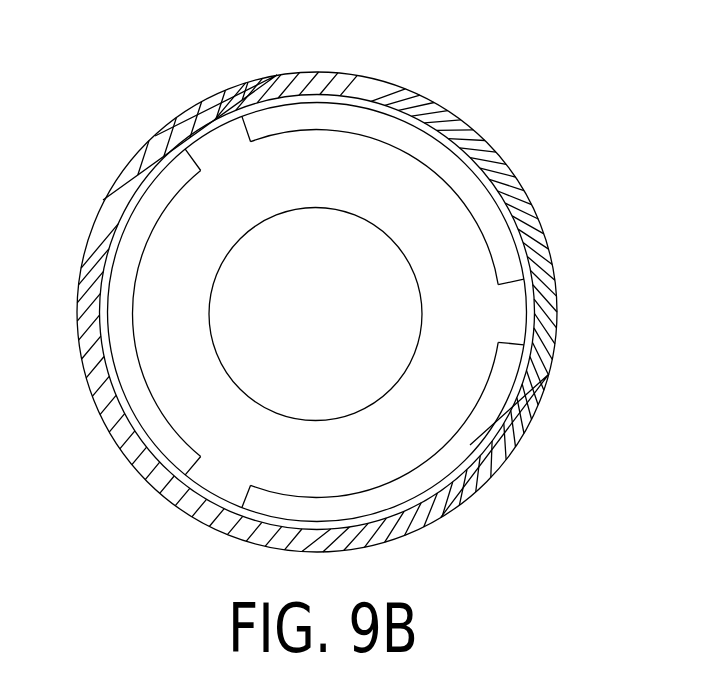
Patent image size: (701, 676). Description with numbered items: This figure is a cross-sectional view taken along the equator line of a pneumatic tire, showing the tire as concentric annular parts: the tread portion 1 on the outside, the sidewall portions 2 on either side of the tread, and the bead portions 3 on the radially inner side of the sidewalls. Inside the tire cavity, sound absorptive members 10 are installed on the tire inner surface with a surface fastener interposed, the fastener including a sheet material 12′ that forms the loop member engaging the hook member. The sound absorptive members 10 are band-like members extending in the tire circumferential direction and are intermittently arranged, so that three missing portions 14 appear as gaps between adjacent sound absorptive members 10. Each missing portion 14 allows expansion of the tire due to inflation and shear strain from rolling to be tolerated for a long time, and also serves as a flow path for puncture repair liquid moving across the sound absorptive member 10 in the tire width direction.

The tread portion 1 is at (432, 99).
The sidewall portion 2 is at (447, 191).
The bead portion 3 is at (410, 238).
The sound absorptive member 10 is at (300, 118).
The sheet material 12′ is at (371, 93).
The missing portion 14 is at (224, 130).